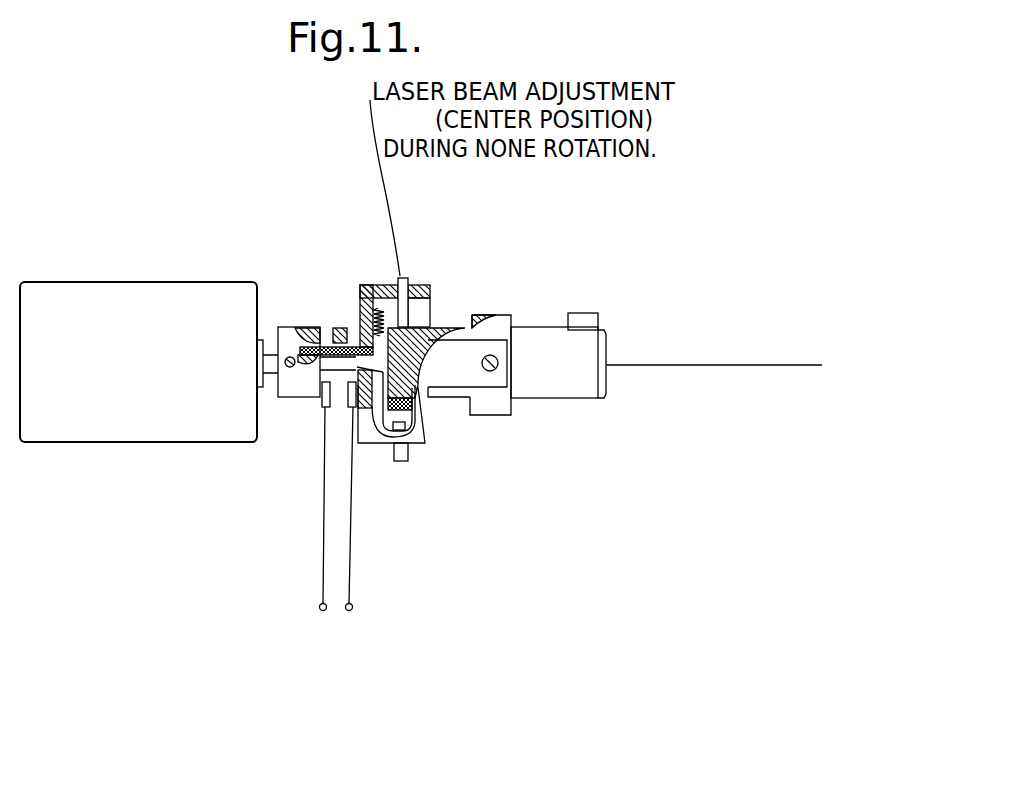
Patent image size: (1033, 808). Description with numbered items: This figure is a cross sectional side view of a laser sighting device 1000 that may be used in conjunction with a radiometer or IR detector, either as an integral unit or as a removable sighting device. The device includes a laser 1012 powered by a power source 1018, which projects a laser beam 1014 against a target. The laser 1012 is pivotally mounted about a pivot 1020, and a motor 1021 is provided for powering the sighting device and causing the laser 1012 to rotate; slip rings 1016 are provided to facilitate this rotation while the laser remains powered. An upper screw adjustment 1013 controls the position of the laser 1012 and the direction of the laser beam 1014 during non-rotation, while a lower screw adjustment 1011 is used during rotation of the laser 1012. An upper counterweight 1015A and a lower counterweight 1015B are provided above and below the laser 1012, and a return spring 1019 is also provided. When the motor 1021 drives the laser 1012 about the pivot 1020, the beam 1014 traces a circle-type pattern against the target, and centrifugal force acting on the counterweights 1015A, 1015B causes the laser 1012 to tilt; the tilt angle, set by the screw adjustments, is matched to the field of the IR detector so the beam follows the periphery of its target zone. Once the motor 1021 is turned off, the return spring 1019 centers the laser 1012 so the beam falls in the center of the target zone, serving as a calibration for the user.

The laser sighting device 1000 is at (293, 445).
The laser beam angle adjustment during rotation 1011 is at (402, 461).
The laser 1012 is at (541, 327).
The upper screw adjustment 1013 is at (408, 280).
The laser beam 1014 is at (753, 365).
The upper counterweight 1015A is at (590, 313).
The lower counterweight 1015B is at (418, 402).
The slip rings 1016 is at (345, 327).
The power source 1018 is at (323, 611).
The return spring 1019 is at (363, 285).
The pivot 1020 is at (512, 370).
The motor 1021 is at (88, 282).